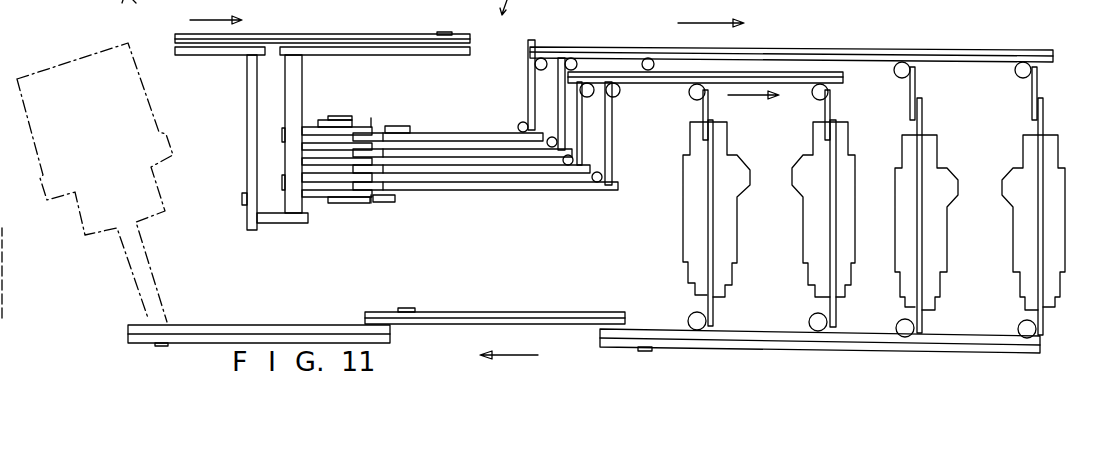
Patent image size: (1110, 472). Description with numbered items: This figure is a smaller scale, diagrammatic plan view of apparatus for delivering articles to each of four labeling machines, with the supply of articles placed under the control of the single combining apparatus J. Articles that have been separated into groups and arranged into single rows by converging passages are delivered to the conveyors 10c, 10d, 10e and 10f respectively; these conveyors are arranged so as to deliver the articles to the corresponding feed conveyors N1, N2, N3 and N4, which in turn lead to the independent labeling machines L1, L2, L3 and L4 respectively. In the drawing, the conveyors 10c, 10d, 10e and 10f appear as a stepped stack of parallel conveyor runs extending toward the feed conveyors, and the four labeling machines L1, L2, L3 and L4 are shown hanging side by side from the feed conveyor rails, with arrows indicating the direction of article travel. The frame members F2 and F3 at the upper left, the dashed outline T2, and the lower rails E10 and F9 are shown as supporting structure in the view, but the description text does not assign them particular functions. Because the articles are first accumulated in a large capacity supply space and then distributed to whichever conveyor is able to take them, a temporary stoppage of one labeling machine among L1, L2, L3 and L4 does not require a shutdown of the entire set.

The hanger bracket (dashed) T2 is at (37, 147).
The frame member F2 is at (315, 94).
The frame post F3 is at (289, 97).
The conveyor 10c is at (478, 132).
The conveyor 10d is at (497, 152).
The conveyor 10e is at (513, 170).
The conveyor 10f is at (568, 190).
The combining apparatus J is at (463, 87).
The feed conveyor N1 is at (630, 50).
The feed conveyor N2 is at (652, 62).
The feed conveyor N3 is at (793, 85).
The feed conveyor N4 is at (672, 69).
The labeling machine L1 is at (1058, 198).
The labeling machine L2 is at (934, 242).
The labeling machine L3 is at (818, 225).
The labeling machine L4 is at (697, 197).
The track rail E10 is at (662, 333).
The lower frame rail F9 is at (820, 354).